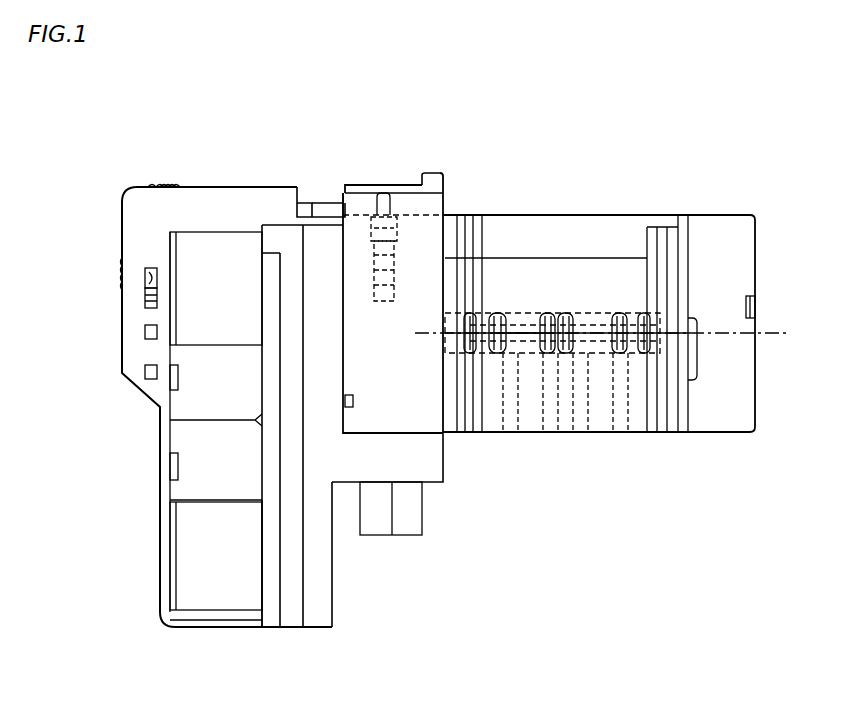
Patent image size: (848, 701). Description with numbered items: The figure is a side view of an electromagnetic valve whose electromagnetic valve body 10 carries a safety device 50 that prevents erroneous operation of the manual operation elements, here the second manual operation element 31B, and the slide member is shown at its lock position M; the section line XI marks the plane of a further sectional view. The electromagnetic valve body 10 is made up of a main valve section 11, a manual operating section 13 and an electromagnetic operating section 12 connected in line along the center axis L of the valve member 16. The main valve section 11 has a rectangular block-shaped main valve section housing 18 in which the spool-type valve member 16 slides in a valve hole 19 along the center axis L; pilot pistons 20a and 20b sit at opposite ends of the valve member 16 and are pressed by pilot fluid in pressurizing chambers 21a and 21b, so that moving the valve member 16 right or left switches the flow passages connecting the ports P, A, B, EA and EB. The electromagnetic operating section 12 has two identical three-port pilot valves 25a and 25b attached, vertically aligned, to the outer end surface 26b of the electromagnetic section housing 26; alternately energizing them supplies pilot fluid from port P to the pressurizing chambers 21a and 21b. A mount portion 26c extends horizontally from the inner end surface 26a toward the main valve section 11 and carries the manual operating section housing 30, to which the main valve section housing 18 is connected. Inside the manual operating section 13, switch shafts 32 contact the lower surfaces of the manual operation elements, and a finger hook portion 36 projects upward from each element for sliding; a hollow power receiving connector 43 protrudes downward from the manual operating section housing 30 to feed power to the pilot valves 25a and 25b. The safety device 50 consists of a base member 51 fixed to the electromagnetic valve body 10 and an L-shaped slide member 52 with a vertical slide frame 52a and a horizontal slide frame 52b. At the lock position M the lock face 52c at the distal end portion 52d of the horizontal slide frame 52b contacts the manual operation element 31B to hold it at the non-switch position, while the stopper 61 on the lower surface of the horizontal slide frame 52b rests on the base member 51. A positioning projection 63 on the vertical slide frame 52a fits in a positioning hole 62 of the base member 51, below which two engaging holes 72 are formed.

The electromagnetic valve body 10 is at (570, 172).
The main valve section 11 is at (599, 262).
The electromagnetic operating section 12 is at (87, 602).
The manual operating section 13 is at (394, 142).
The valve member 16 is at (535, 313).
The main valve section housing 18 is at (583, 413).
The valve hole 19 is at (598, 313).
The pilot piston 20a is at (448, 330).
The pilot piston 20b is at (658, 318).
The pressurizing chamber 21a is at (447, 432).
The pressurizing chamber 21b is at (683, 323).
The pilot valve 25a is at (240, 297).
The pilot valve 25b is at (240, 567).
The electromagnetic section housing 26 is at (297, 597).
The inner end surface 26a is at (343, 343).
The outer end surface 26b is at (262, 575).
The mount portion 26c is at (397, 468).
The manual operating section housing 30 is at (430, 203).
The manual operation element 31B is at (393, 190).
The switch shaft 32 is at (380, 220).
The finger hook portion 36 is at (438, 172).
The power receiving connector 43 is at (377, 527).
The safety device 50 is at (63, 174).
The base member 51 is at (85, 439).
The slide member 52 is at (173, 407).
The vertical slide frame 52a is at (118, 250).
The horizontal slide frame 52b is at (208, 185).
The lock face 52c is at (345, 192).
The distal end portion 52d is at (302, 205).
The stopper 61 is at (298, 188).
The positioning hole 62 is at (145, 280).
The positioning projection 63 is at (150, 300).
The engaging holes 72 is at (145, 372).
The port A is at (528, 420).
The port B is at (598, 410).
The port EA is at (492, 420).
The port EB is at (638, 420).
The port P is at (565, 410).
The center axis L is at (609, 335).
The lock position M is at (180, 110).
The section line XI is at (150, 160).